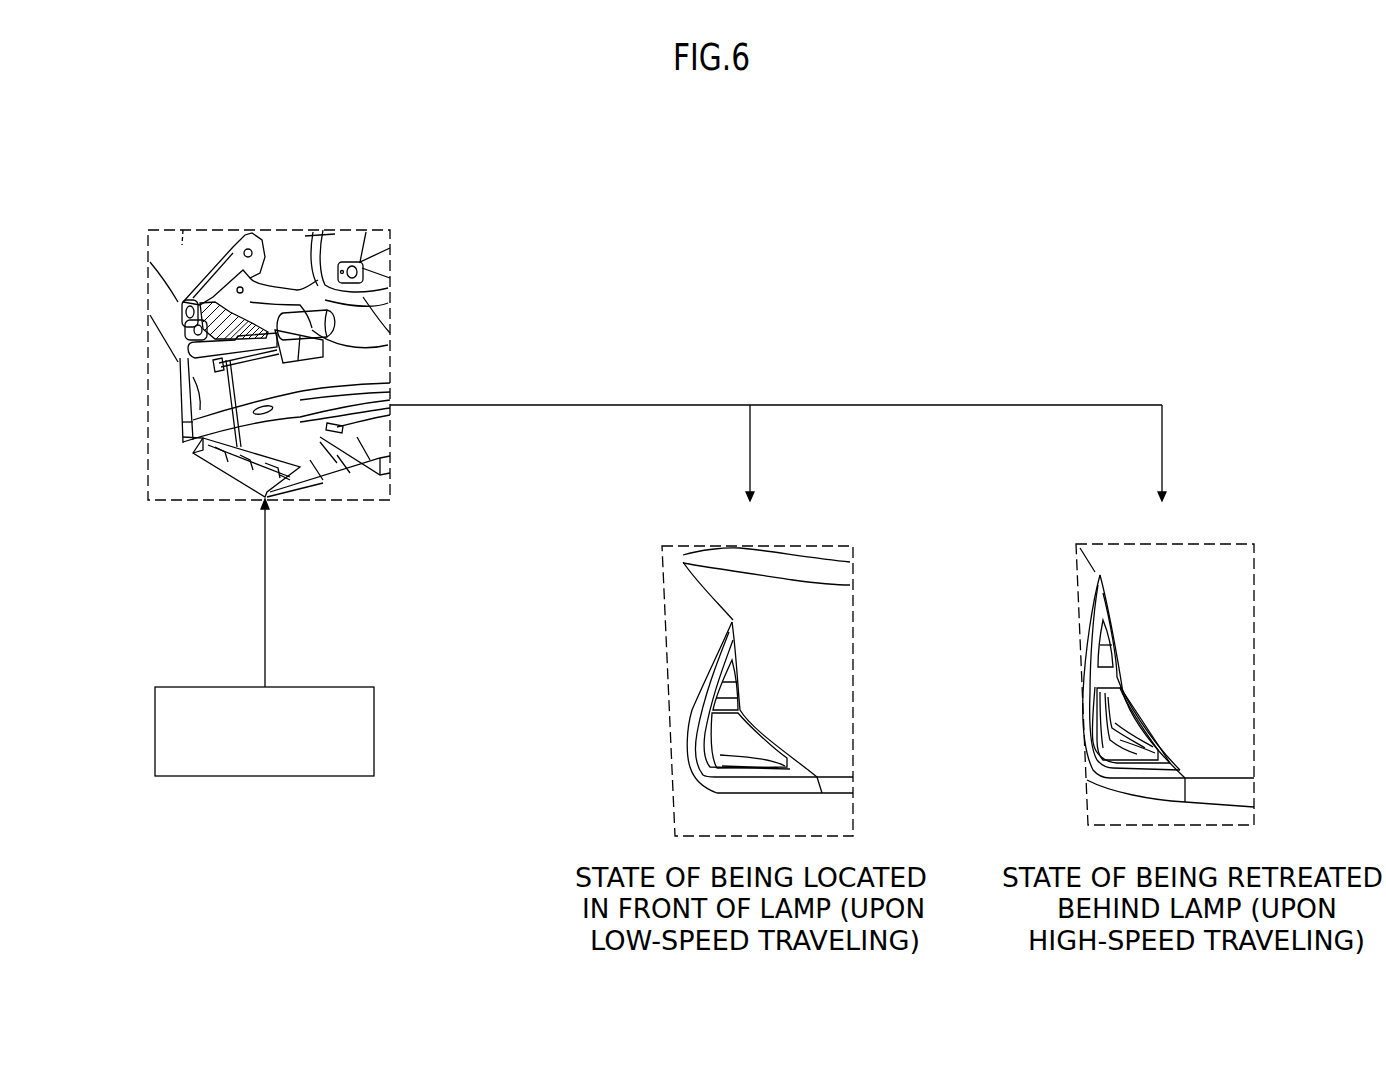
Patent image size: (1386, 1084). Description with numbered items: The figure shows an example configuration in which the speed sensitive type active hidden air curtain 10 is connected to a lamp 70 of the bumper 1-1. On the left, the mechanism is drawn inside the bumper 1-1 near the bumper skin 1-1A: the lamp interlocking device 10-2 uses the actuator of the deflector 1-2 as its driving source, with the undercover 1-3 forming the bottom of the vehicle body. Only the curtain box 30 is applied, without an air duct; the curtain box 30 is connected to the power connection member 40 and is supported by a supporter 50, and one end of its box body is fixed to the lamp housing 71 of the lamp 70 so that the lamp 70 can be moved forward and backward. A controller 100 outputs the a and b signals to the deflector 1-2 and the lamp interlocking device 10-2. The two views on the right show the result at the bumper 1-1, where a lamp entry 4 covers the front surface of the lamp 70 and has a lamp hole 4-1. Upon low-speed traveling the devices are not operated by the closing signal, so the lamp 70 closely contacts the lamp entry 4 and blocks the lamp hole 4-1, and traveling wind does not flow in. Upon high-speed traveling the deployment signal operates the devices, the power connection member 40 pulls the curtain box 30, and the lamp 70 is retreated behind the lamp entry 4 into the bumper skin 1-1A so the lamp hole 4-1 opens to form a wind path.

The bumper 1-1 is at (187, 247).
The bumper skin 1-1A is at (803, 590).
The deflector 1-2 is at (227, 467).
The undercover 1-3 is at (370, 475).
The lamp entry 4 is at (737, 690).
The lamp hole 4-1 is at (1097, 715).
The speed sensitive type active hidden air curtain 10 is at (327, 369).
The lamp interlocking device 10-2 is at (452, 155).
The curtain box 30 is at (345, 350).
The power connection member 40 is at (190, 420).
The supporter 50 is at (193, 367).
The lamp 70 is at (308, 287).
The lamp housing 71 is at (190, 332).
The controller 100 is at (263, 777).